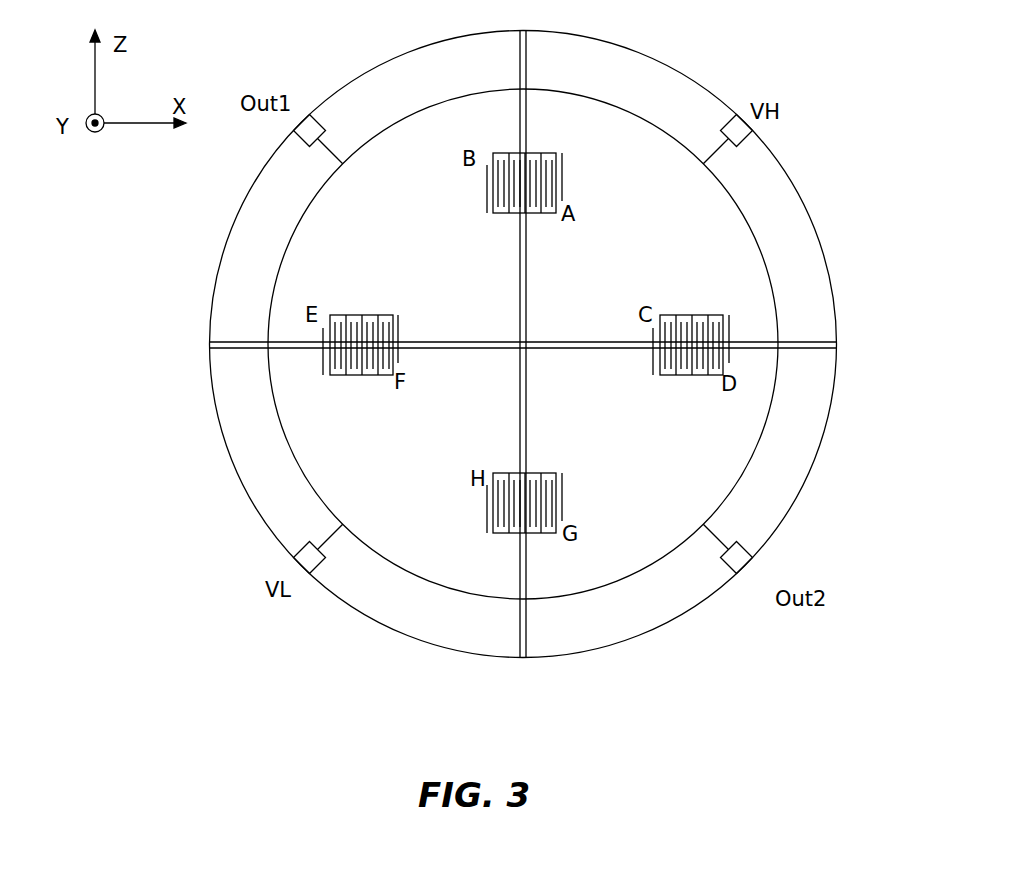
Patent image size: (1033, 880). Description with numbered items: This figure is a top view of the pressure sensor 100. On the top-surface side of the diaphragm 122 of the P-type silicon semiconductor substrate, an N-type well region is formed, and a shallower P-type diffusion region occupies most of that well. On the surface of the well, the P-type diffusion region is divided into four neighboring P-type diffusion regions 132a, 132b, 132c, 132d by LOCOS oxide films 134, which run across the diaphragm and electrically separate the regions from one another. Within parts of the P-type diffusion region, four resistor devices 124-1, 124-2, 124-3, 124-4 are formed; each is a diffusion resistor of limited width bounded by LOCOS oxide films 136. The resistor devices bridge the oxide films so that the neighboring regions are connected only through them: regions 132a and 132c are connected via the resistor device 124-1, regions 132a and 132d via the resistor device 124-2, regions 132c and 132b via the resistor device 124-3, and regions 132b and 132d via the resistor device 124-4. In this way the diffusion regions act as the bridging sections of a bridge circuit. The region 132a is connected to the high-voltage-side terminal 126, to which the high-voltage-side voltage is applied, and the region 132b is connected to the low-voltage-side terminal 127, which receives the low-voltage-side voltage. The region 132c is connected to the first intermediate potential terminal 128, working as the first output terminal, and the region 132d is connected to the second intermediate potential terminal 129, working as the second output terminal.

The pressure sensor 100 is at (700, 694).
The diaphragm 122 is at (613, 100).
The resistor device 124-1 is at (600, 161).
The resistor device 124-2 is at (720, 295).
The resistor device 124-3 is at (415, 295).
The resistor device 124-4 is at (595, 448).
The high-voltage-side terminal 126 is at (750, 135).
The low-voltage-side terminal 127 is at (312, 563).
The first intermediate potential terminal 128 is at (308, 116).
The second intermediate potential terminal 129 is at (739, 563).
The P-type diffusion region 132a is at (688, 257).
The P-type diffusion region 132b is at (316, 415).
The P-type diffusion region 132c is at (316, 258).
The P-type diffusion region 132d is at (688, 415).
The LOCOS oxide film 134 is at (526, 290).
The LOCOS oxide film 136 is at (489, 205).